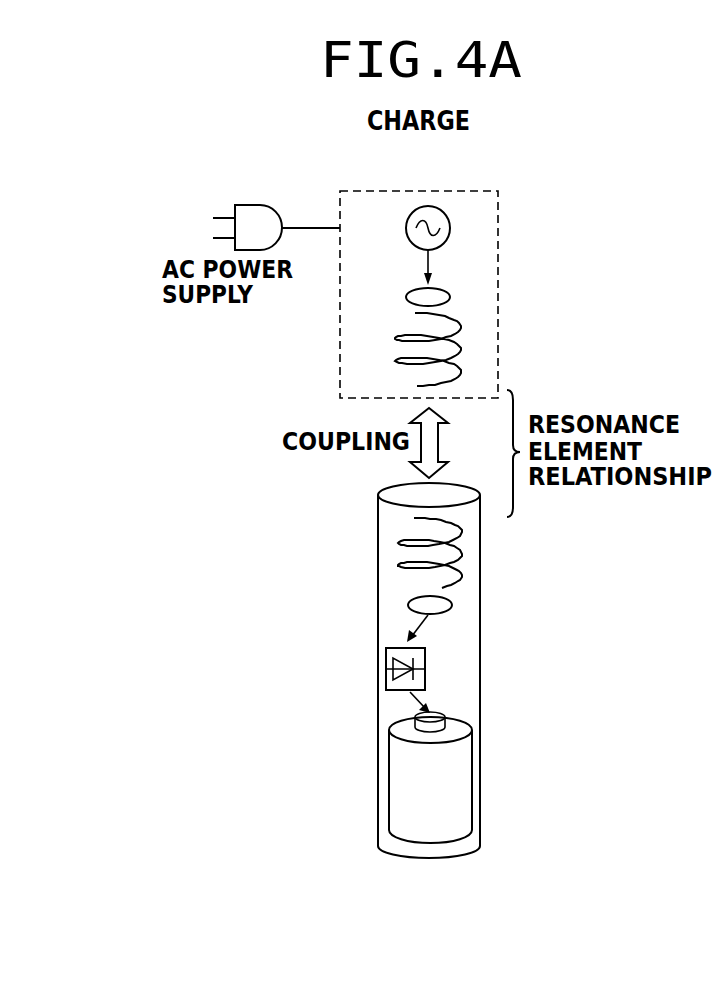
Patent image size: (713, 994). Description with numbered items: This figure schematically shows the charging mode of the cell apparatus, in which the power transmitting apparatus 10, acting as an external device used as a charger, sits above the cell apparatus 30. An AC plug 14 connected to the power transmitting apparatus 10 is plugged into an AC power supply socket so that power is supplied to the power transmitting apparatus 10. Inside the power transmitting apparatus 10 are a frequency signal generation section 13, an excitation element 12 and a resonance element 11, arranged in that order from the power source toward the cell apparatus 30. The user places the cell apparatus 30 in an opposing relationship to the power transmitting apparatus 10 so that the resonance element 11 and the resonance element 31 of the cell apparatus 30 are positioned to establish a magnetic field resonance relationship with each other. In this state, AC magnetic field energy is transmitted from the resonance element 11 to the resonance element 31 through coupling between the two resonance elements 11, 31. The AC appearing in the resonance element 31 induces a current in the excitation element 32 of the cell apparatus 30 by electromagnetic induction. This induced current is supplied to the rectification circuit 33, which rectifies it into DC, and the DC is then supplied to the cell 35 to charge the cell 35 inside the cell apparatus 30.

The power transmitting apparatus 10 is at (338, 328).
The resonance element 11 is at (461, 372).
The excitation element 12 is at (450, 296).
The frequency signal generation section 13 is at (450, 228).
The AC plug 14 is at (258, 205).
The cell apparatus 30 is at (480, 722).
The resonance element 31 is at (462, 545).
The excitation element 32 is at (452, 603).
The rectification circuit 33 is at (425, 669).
The cell 35 is at (460, 800).